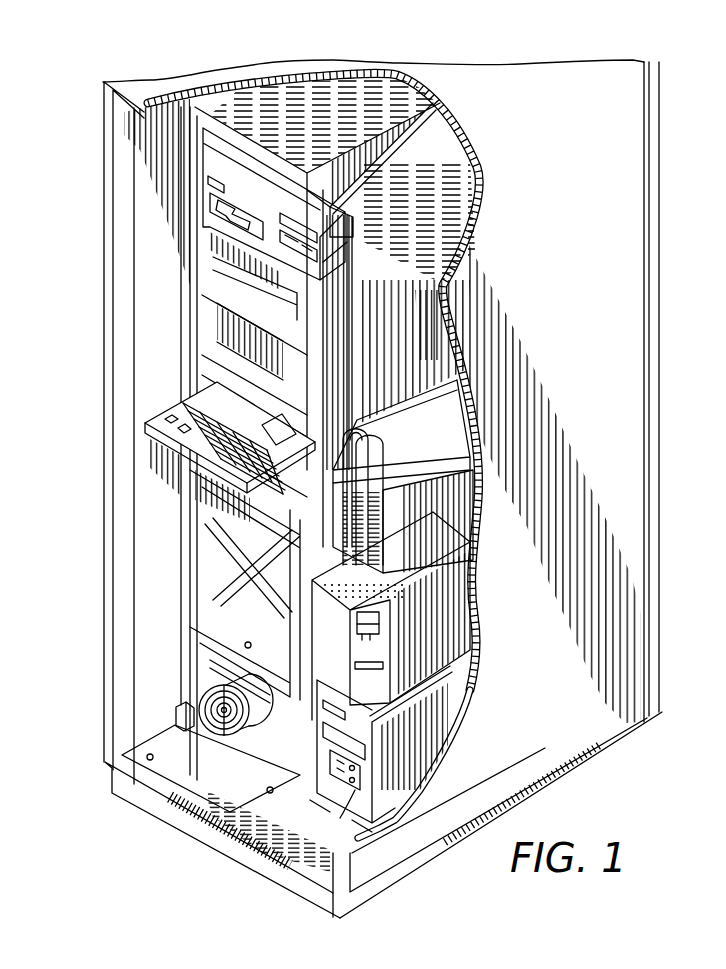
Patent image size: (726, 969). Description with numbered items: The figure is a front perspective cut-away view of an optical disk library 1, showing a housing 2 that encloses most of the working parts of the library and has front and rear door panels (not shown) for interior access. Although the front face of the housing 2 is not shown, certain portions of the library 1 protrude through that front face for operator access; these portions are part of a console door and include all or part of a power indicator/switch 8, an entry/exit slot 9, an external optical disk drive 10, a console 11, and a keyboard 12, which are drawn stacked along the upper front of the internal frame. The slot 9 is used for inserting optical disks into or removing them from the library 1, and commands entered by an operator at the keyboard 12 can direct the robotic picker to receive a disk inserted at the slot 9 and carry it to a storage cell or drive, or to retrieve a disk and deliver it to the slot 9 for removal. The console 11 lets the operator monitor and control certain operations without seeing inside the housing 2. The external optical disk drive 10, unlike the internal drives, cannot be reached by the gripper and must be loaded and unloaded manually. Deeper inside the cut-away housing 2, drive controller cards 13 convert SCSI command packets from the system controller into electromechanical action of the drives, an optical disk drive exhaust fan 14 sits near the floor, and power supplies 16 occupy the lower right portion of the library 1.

The library 1 is at (671, 152).
The housing 2 is at (660, 227).
The power indicator/switch 8 is at (214, 178).
The entry/exit slot 9 is at (240, 213).
The external optical disk drive 10 is at (323, 262).
The console 11 is at (290, 322).
The keyboard 12 is at (240, 423).
The drive controller cards 13 is at (380, 535).
The optical disk drive exhaust fan 14 is at (210, 690).
The power supplies 16 is at (437, 710).